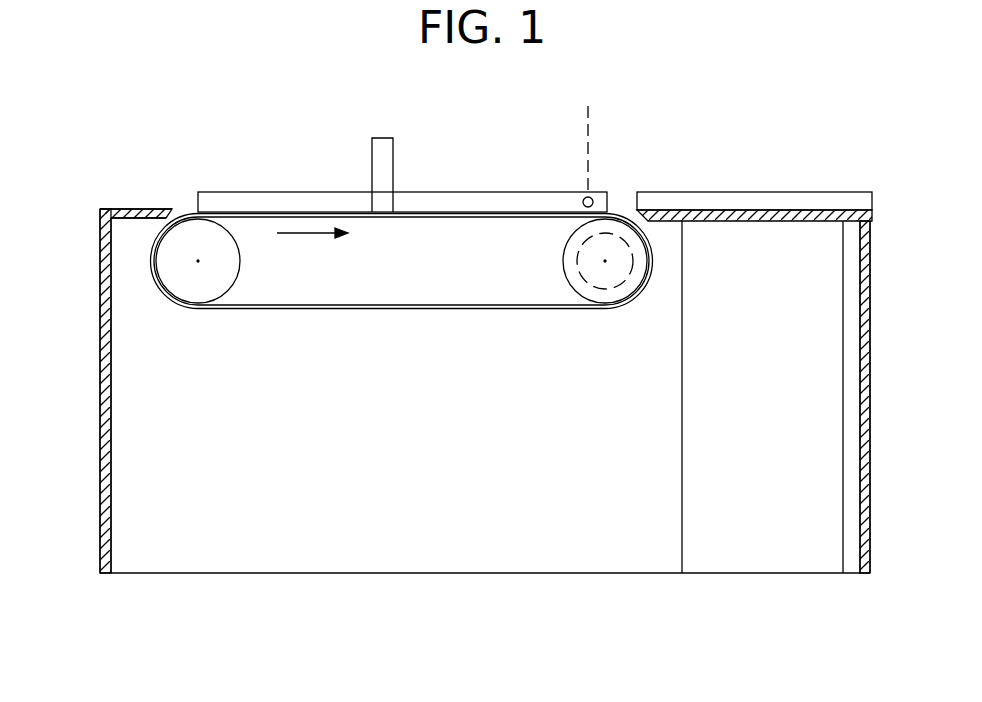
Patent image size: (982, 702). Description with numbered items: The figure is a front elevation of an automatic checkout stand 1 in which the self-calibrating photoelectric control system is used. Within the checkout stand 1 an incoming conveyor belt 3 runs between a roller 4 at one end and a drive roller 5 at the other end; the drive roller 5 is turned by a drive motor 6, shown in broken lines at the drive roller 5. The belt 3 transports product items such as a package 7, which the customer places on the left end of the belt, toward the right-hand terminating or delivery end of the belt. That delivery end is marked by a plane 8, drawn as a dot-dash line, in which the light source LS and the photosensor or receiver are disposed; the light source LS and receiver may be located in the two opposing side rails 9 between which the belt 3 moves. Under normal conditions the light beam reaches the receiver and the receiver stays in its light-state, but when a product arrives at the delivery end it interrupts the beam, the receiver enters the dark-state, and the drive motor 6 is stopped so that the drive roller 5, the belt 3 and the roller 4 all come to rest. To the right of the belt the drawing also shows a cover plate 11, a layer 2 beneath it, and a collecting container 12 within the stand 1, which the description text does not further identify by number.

The checkout stand 1 is at (98, 370).
The cover layer 2 is at (828, 214).
The incoming conveyor belt 3 is at (418, 220).
The roller 4 is at (240, 264).
The drive roller 5 is at (562, 256).
The drive motor 6 is at (600, 288).
The package 7 is at (382, 137).
The plane 8 is at (586, 125).
The side rails 9 is at (467, 192).
The cover plate 11 is at (772, 210).
The collecting container 12 is at (680, 368).
The light source LS is at (584, 197).